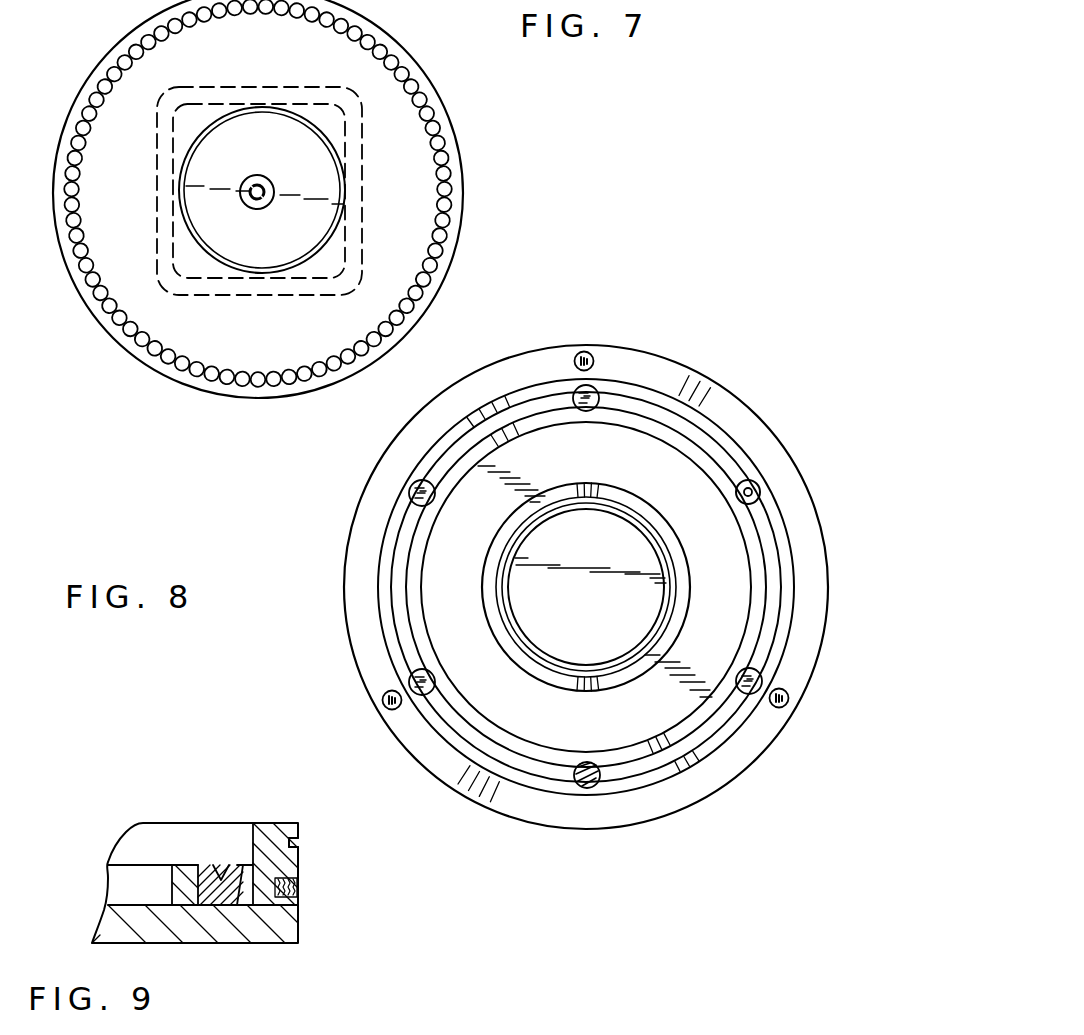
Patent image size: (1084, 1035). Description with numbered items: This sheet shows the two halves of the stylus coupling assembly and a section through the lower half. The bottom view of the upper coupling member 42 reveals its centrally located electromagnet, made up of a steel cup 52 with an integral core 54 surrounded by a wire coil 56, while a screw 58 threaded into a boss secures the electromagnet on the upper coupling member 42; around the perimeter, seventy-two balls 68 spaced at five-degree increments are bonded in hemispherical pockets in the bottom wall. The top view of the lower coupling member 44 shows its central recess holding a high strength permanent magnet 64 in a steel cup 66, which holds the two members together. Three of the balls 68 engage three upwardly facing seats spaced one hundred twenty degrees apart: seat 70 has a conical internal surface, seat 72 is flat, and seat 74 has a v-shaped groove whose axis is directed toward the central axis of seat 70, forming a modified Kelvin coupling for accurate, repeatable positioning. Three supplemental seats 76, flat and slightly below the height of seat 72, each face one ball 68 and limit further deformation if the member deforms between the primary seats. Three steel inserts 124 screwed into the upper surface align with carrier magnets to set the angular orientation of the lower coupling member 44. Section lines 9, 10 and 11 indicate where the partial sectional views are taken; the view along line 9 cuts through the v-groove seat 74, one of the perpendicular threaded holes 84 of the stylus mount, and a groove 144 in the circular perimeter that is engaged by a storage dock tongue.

In FIG. 7, the upper coupling member 42 is at (480, 255).
In FIG. 7, the balls 68 is at (442, 126).
In FIG. 7, the screw 58 is at (259, 213).
In FIG. 7, the steel cup 52 is at (345, 190).
In FIG. 7, the wire coil 56 is at (308, 219).
In FIG. 7, the core 54 is at (274, 185).
In FIG. 8, the lower coupling member 44 is at (580, 340).
In FIG. 9, the lower coupling member 44 is at (286, 921).
In FIG. 8, the flat seat 72 is at (418, 500).
In FIG. 8, the permanent magnet 64 is at (595, 581).
In FIG. 8, the steel cup 66 is at (614, 587).
In FIG. 8, the supplemental seats 76 is at (599, 394).
In FIG. 8, the steel inserts 124 is at (593, 357).
In FIG. 8, the conical seat 70 is at (756, 486).
In FIG. 8, the v-groove seat 74 is at (590, 788).
In FIG. 9, the v-groove seat 74 is at (221, 878).
In FIG. 8, the section line 11— 11 is at (360, 460).
In FIG. 8, the section line 10— 10 is at (733, 673).
In FIG. 8, the section line 9— 9 is at (518, 750).
In FIG. 9, the grooves 144 is at (297, 845).
In FIG. 9, the holes 84 is at (298, 888).